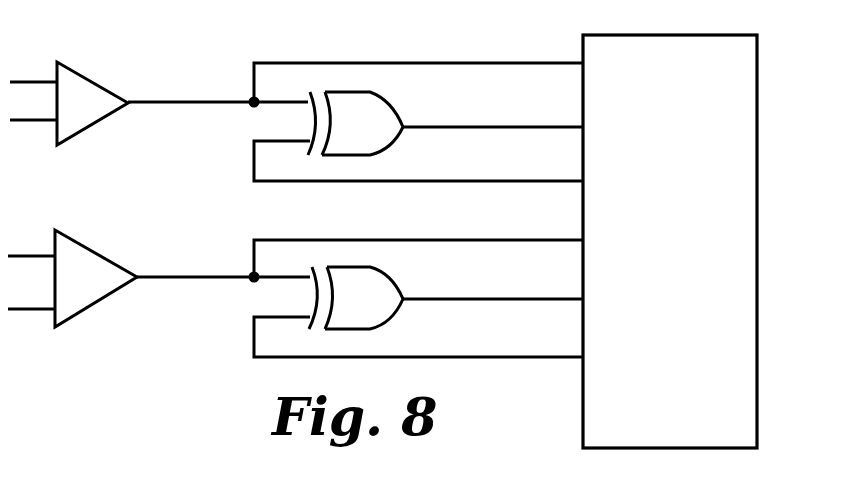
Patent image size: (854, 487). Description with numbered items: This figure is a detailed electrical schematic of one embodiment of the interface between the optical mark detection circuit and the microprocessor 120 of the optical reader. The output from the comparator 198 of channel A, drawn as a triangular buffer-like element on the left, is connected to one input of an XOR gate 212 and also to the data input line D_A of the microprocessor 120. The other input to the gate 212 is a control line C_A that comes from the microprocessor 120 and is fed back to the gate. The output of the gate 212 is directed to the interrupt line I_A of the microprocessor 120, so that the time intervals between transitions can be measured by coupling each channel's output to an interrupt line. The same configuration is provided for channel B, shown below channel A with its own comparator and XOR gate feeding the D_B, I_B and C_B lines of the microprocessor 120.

The comparator 198 is at (97, 88).
The XOR gate 212 is at (476, 94).
The microprocessor 120 is at (743, 230).